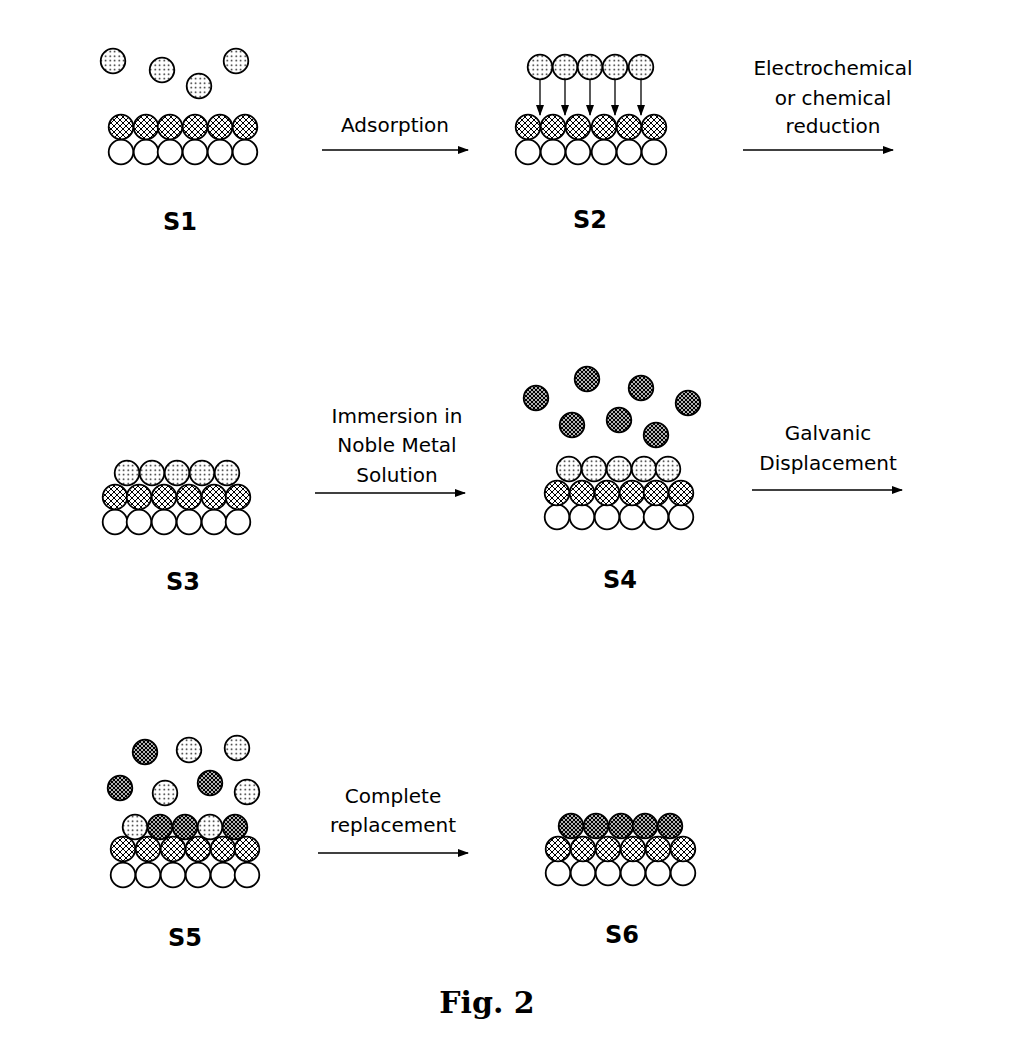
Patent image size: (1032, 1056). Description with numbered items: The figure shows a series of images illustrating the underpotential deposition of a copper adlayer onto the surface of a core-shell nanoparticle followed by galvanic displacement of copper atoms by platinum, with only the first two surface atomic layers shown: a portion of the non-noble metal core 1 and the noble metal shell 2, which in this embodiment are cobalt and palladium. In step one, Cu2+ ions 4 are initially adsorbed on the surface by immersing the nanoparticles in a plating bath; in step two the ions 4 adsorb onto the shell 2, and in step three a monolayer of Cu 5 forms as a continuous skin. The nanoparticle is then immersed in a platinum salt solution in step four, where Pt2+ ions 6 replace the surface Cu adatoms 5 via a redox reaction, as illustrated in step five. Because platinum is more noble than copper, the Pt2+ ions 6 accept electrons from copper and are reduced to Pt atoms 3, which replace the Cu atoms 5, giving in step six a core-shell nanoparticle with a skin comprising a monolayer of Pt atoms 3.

The non-noble metal core 1 is at (108, 155).
The noble metal shell 2 is at (108, 125).
The Pt atoms 3 is at (249, 823).
The Cu2+ ions 4 is at (171, 57).
The Cu adlayer 5 is at (159, 460).
The Pt2+ ions 6 is at (654, 377).